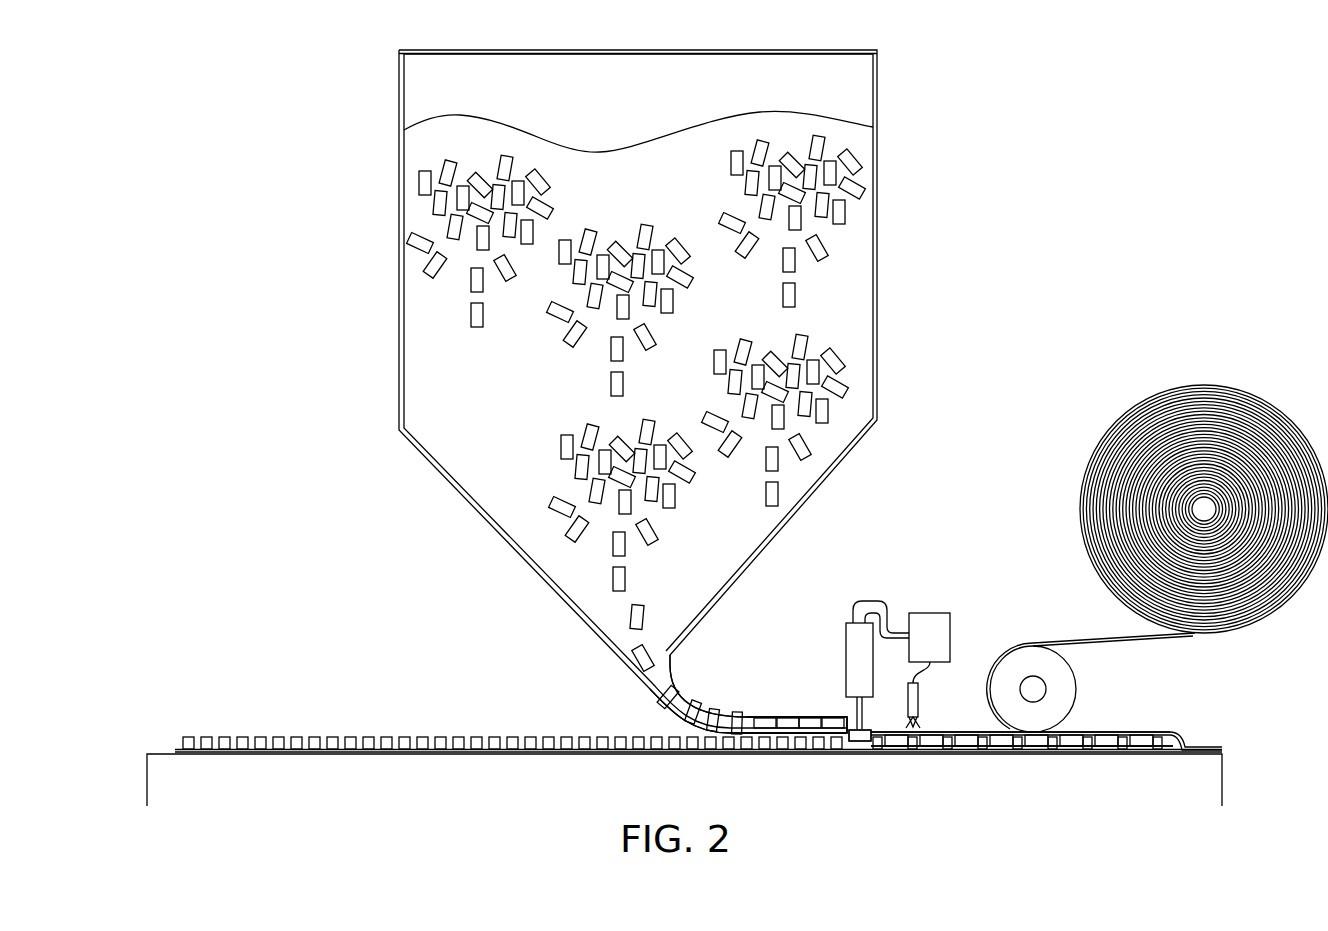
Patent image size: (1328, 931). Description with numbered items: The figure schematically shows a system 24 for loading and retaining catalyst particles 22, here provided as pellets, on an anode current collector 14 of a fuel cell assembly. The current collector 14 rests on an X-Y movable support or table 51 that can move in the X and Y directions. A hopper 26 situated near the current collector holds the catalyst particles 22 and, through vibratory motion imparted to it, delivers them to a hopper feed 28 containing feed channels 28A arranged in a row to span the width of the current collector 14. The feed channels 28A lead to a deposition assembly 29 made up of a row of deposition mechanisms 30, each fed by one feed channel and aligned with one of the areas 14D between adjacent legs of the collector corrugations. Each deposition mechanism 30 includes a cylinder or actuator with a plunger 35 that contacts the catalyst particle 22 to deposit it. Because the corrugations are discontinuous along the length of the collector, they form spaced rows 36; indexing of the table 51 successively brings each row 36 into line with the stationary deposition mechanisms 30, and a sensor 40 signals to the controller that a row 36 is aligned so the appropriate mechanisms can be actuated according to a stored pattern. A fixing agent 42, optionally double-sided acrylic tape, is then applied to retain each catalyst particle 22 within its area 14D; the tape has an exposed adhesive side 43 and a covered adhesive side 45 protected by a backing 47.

The anode current collector 14 is at (1162, 753).
The areas between adjacent legs of corrugations 14D is at (870, 748).
The catalyst particles 22 is at (862, 190).
The system 24 is at (316, 97).
The hopper 26 is at (880, 287).
The hopper feed 28 is at (680, 668).
The feed channels 28A is at (768, 715).
The deposition assembly 29 is at (877, 590).
The deposition mechanisms 30 is at (846, 640).
The plunger 35 is at (857, 715).
The rows of corrugations 36 is at (534, 753).
The sensor 40 is at (920, 700).
The fixing agent 42 is at (1133, 660).
The exposed adhesive side 43 is at (1080, 637).
The covered adhesive side 45 is at (1203, 643).
The backing 47 is at (1105, 732).
The X-Y movable support or table 51 is at (156, 787).